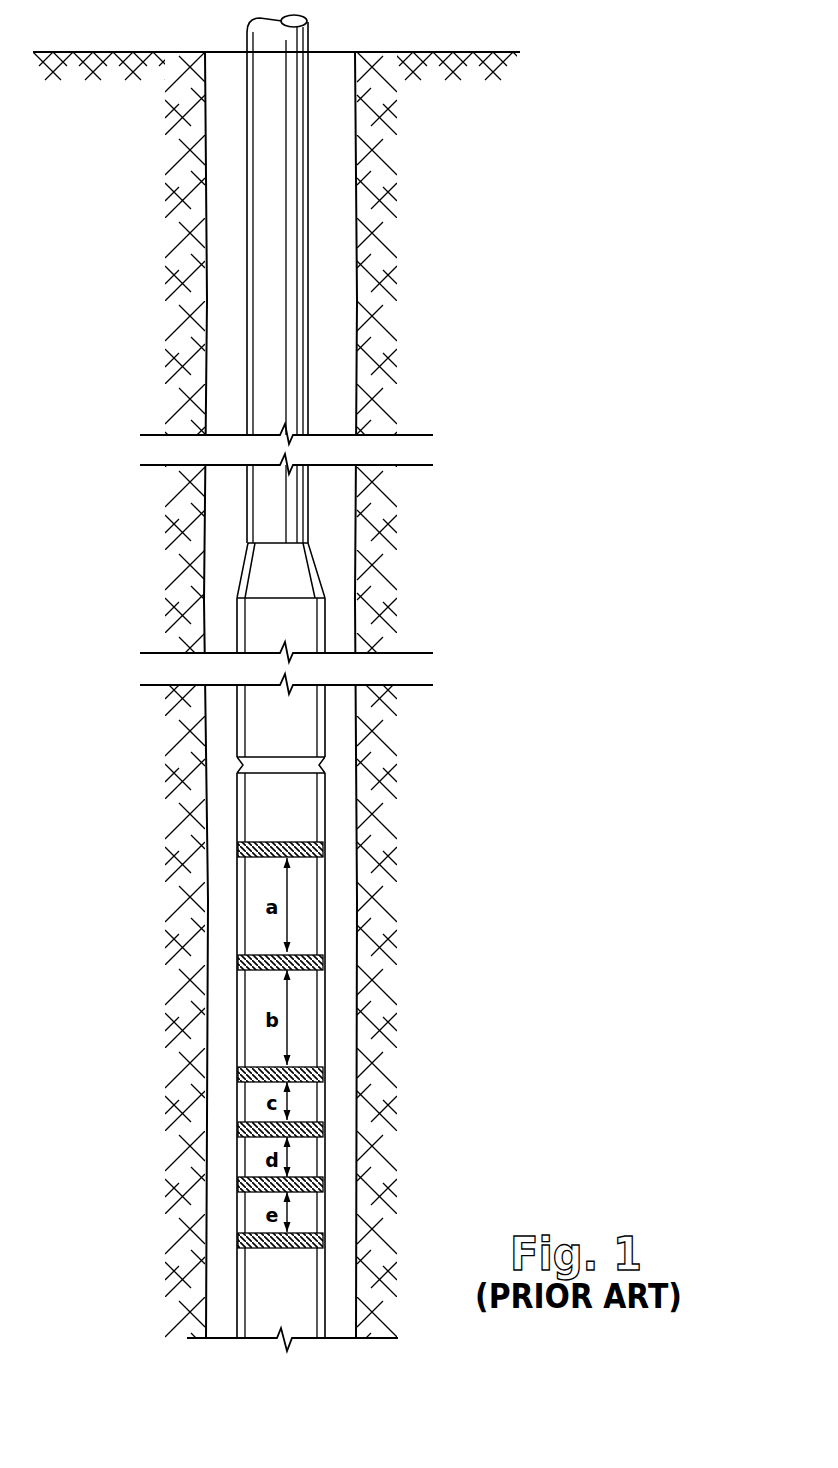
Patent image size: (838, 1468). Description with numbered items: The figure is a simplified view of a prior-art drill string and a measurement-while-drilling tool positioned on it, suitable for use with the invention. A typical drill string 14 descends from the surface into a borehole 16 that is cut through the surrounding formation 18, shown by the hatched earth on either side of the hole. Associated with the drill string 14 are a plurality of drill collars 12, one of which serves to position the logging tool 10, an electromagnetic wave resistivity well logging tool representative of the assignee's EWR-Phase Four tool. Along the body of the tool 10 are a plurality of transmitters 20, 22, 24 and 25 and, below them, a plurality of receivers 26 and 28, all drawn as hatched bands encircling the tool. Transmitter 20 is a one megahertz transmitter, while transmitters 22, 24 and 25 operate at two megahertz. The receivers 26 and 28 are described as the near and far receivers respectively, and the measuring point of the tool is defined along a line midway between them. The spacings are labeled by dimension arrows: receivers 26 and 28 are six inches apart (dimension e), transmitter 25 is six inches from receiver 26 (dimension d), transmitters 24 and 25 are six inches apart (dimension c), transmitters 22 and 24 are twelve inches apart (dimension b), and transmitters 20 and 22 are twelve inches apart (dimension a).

The logging tool 10 is at (330, 1020).
The drill collar 12 is at (322, 627).
The drill string 14 is at (310, 145).
The borehole 16 is at (345, 287).
The formation 18 is at (202, 303).
The transmitter 20 is at (238, 850).
The transmitter 22 is at (238, 963).
The transmitter 24 is at (238, 1075).
The transmitter 25 is at (238, 1130).
The receiver 26 is at (238, 1185).
The receiver 28 is at (238, 1241).